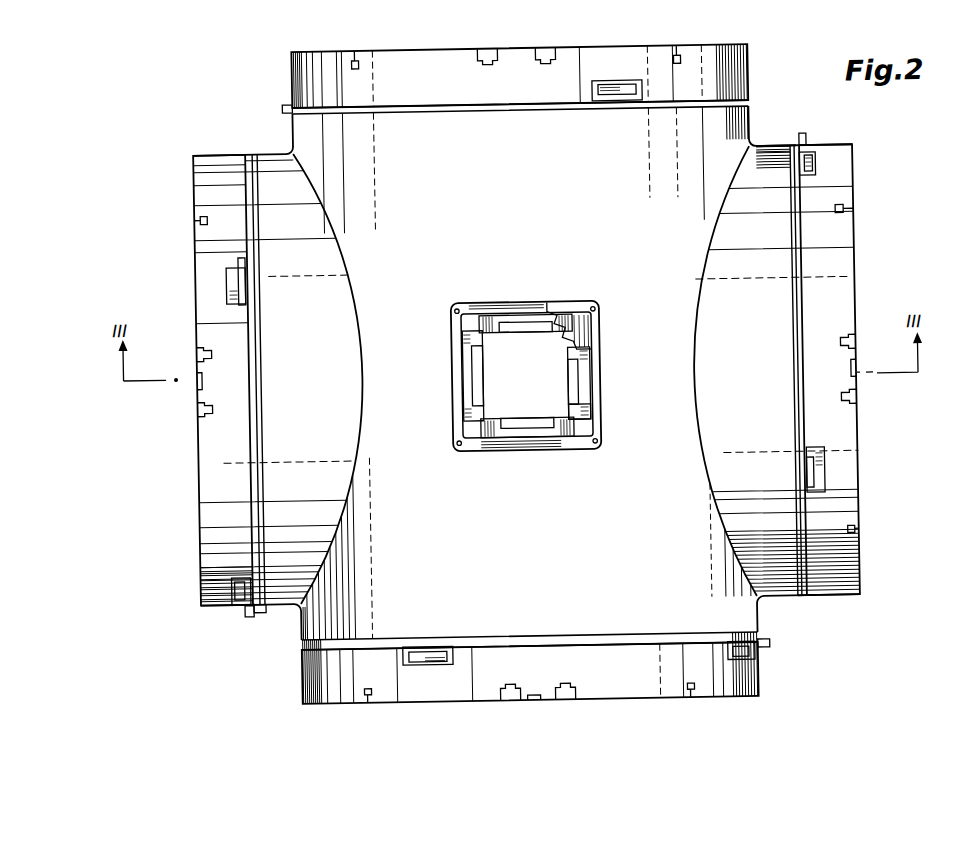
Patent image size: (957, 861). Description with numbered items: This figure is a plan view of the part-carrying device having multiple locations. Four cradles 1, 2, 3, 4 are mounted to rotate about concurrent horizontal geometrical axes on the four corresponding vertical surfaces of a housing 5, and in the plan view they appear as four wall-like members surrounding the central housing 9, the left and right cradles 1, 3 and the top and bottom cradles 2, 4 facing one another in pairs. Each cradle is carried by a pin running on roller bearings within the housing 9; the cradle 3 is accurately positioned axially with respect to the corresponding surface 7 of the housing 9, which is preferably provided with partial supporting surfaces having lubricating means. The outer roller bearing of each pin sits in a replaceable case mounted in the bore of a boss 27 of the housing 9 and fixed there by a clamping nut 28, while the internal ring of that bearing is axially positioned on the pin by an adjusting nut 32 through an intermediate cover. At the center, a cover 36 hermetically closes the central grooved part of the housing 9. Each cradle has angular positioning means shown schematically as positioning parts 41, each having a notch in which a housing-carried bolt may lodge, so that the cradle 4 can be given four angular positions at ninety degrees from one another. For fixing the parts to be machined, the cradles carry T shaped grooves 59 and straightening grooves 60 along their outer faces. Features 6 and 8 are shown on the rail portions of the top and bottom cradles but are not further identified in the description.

The cradle 1 is at (186, 470).
The cradle 2 is at (289, 67).
The cradle 3 is at (866, 290).
The cradle 4 is at (285, 685).
The housing 5 is at (256, 609).
The top guide rail 6 is at (752, 108).
The surface of the housing 7 is at (797, 599).
The bottom guide rail 8 is at (296, 641).
The housing 9 is at (777, 157).
The boss of the housing 27 is at (543, 358).
The clamping nut 28 is at (582, 408).
The adjusting nut 32 is at (572, 368).
The cover 36 is at (570, 303).
The positioning part 41 is at (807, 158).
The T shaped groove 59 is at (847, 215).
The straightening groove 60 is at (853, 377).